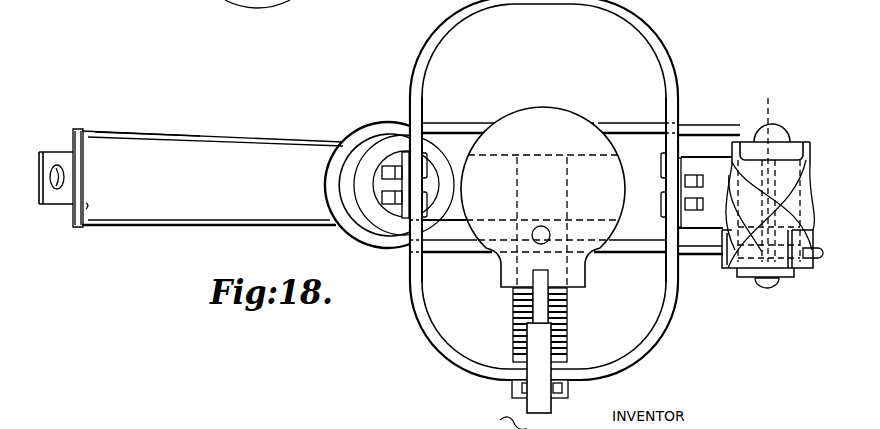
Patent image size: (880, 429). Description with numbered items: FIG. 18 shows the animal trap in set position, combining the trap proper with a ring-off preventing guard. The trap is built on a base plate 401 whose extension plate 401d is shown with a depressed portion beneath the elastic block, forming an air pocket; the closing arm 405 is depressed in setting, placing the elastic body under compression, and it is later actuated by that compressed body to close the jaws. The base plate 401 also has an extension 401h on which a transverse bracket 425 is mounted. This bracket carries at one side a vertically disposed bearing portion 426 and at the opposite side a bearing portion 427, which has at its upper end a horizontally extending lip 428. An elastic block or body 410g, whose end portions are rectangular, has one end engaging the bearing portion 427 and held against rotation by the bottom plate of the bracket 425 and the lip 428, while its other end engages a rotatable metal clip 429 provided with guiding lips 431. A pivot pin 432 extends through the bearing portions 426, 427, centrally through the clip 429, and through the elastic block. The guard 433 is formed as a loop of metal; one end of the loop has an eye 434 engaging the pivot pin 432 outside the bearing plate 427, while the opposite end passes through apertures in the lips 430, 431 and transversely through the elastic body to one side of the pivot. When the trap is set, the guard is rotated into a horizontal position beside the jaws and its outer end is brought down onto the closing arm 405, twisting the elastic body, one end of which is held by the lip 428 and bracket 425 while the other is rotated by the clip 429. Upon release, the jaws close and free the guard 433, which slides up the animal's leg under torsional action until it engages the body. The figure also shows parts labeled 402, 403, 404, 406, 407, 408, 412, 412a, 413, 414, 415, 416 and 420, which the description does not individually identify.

The base plate 401 is at (458, 213).
The extension plate 401d is at (157, 133).
The extension 401h is at (708, 193).
The plate 402 is at (407, 213).
The bolt nut 403 is at (382, 176).
The loop frame 404 is at (441, 44).
The closing arm 405 is at (212, 178).
The end block 406 is at (42, 151).
The end plate 407 is at (85, 167).
The clip 408 is at (386, 205).
The rod 410g is at (777, 186).
The disc 412 is at (543, 108).
The shaft 412a is at (549, 300).
The ratchet 413 is at (533, 302).
The ratchet wheel 414 is at (522, 345).
The base 415 is at (558, 388).
The stem 416 is at (539, 357).
The opening 420 is at (57, 164).
The transverse bracket 425 is at (740, 238).
The bearing portion 426 is at (748, 279).
The bearing portion 427 is at (792, 142).
The lip 428 is at (792, 152).
The rotatable metal clip 429 is at (737, 270).
The lip 430 is at (723, 236).
The guiding lips 431 is at (808, 270).
The pivot pin 432 is at (767, 170).
The ring off preventing guard 433 is at (447, 125).
The eye 434 is at (756, 136).